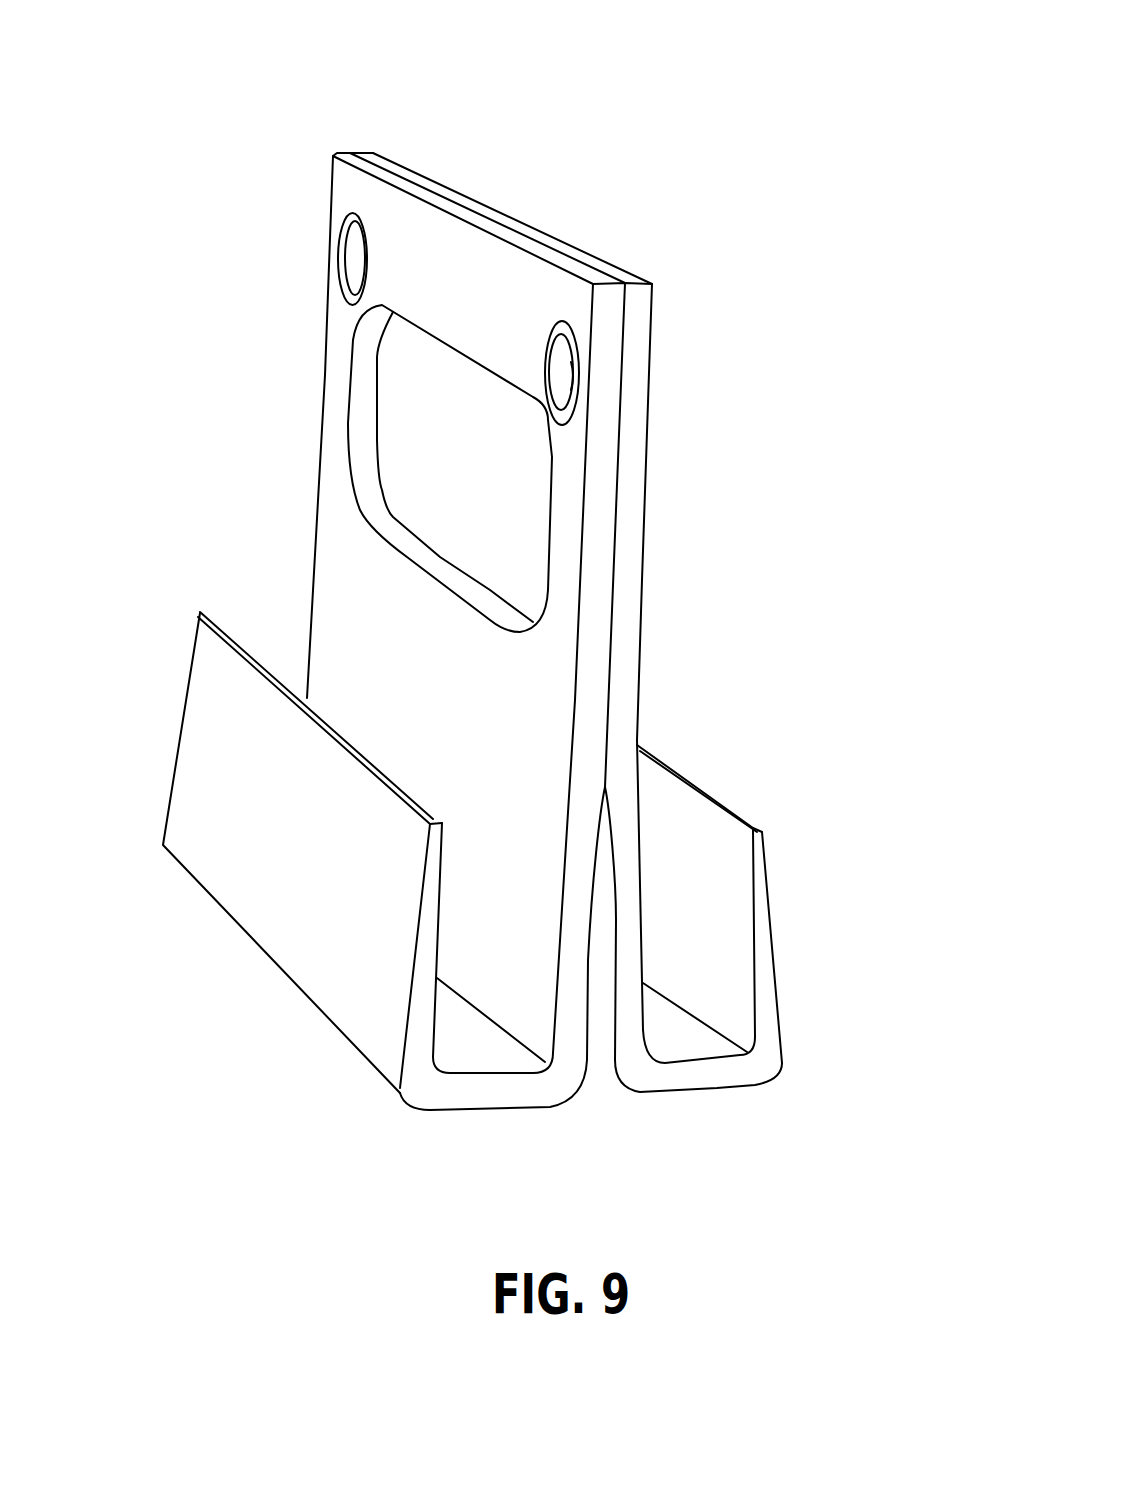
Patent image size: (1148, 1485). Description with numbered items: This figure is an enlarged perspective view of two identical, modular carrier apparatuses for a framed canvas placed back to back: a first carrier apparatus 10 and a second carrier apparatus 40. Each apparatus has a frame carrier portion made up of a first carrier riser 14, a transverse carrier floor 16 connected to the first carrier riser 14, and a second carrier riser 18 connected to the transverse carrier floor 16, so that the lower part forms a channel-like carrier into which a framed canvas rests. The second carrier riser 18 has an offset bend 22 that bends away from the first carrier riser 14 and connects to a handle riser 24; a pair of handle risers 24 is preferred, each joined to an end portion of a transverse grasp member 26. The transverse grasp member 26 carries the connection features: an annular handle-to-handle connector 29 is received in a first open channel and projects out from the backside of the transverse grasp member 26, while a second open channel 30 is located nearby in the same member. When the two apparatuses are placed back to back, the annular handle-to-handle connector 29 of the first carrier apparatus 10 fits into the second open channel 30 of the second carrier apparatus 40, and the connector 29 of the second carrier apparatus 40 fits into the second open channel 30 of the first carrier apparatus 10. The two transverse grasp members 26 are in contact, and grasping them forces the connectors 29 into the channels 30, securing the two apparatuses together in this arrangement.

The carrier apparatus 10 is at (320, 353).
The first carrier riser 14 is at (421, 977).
The transverse carrier floor 16 is at (500, 1093).
The second carrier riser 18 is at (570, 993).
The offset bend 22 is at (577, 843).
The handle riser 24 is at (632, 508).
The transverse grasp member 26 is at (460, 255).
The annular handle-to-handle connector 29 is at (563, 327).
The second open channel 30 is at (343, 268).
The second carrier apparatus 40 is at (657, 443).